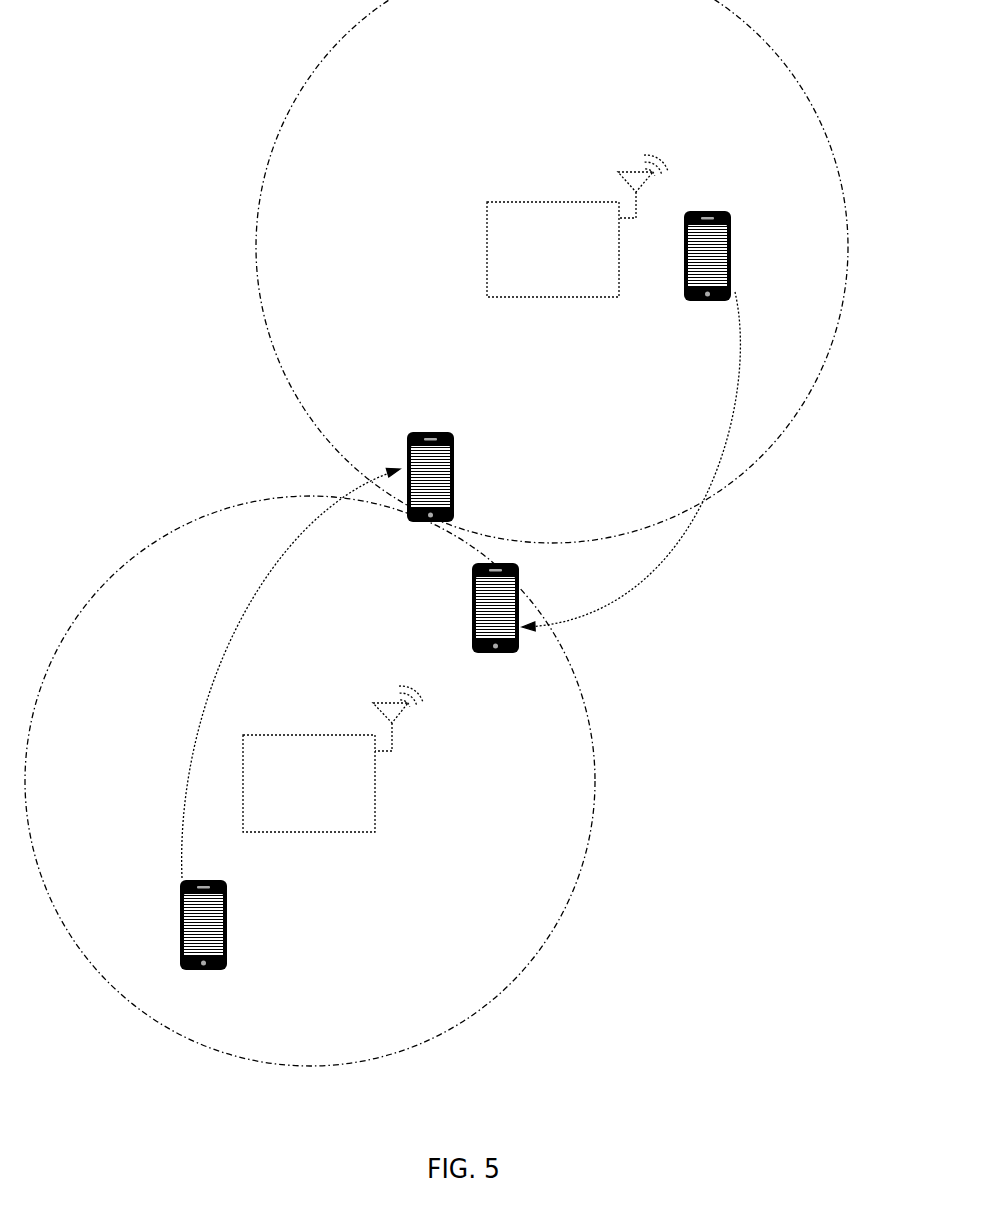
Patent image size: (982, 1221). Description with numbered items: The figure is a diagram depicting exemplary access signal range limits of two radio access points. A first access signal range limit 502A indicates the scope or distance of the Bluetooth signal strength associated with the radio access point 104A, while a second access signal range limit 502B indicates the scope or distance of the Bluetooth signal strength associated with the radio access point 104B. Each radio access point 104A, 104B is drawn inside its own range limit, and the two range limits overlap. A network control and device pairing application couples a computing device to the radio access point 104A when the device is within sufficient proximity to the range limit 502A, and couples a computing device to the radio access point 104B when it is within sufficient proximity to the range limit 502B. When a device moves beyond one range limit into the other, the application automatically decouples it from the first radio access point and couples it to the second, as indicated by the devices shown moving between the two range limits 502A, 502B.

The first access signal range limit 502A is at (578, 693).
The second access signal range limit 502B is at (822, 124).
The radio access point 104A is at (263, 735).
The radio access point 104B is at (506, 202).